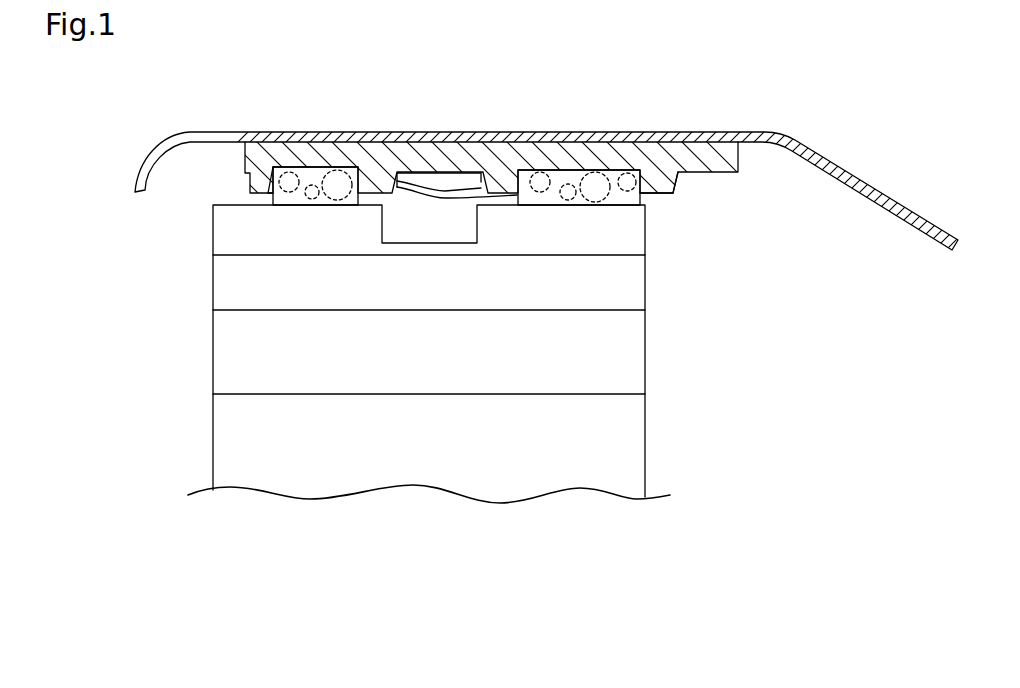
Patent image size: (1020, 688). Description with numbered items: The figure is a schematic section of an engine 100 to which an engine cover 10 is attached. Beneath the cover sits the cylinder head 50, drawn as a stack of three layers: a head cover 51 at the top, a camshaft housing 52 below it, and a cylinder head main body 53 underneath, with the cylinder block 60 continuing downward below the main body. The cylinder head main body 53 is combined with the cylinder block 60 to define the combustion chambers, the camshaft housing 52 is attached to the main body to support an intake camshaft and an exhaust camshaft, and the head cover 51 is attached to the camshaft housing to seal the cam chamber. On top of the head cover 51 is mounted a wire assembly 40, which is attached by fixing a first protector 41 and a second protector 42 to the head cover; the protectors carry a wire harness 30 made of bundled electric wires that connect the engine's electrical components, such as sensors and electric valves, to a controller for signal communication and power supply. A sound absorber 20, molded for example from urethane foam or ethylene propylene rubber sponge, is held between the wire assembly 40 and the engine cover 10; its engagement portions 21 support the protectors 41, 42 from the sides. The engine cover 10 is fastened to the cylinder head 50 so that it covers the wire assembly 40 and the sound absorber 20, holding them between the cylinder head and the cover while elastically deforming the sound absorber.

The engine 100 is at (286, 110).
The engine cover 10 is at (673, 132).
The sound absorber 20 is at (715, 173).
The engagement portion 21 is at (678, 190).
The wire harness 30 is at (580, 170).
The wire assembly 40 is at (257, 182).
The first protector 41 is at (612, 170).
The second protector 42 is at (344, 167).
The cylinder head 50 is at (138, 227).
The head cover 51 is at (213, 237).
The camshaft housing 52 is at (213, 278).
The cylinder head main body 53 is at (213, 322).
The cylinder block 60 is at (213, 423).